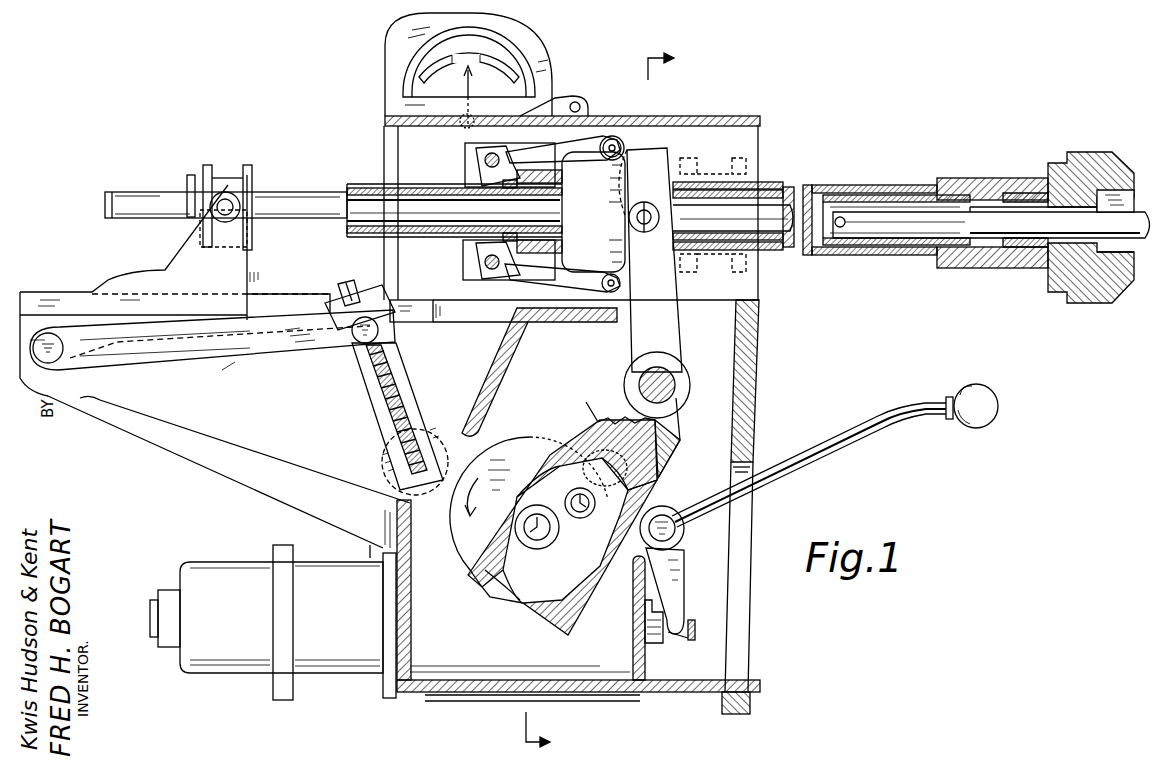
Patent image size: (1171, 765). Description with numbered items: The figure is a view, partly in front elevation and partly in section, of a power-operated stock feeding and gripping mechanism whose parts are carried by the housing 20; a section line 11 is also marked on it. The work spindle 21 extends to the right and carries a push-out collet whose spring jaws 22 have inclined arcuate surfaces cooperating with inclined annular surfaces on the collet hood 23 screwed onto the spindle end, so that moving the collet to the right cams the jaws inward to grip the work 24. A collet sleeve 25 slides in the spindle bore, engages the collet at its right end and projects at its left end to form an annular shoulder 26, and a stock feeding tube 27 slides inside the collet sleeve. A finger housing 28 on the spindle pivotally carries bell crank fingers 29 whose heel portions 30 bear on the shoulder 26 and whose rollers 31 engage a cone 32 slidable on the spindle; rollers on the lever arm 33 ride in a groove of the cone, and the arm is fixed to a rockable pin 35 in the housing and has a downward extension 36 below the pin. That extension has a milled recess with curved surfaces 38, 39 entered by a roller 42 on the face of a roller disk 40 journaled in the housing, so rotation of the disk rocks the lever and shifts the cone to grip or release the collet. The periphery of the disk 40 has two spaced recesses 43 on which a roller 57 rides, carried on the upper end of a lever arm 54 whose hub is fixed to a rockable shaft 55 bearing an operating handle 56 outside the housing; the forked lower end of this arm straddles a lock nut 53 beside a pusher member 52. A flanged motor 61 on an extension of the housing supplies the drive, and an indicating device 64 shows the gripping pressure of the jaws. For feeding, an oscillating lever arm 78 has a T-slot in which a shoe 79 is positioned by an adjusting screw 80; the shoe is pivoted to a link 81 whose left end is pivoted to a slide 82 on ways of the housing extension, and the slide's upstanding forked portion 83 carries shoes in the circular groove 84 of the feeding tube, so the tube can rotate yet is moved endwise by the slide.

The section line 11 is at (605, 390).
The housing 20 is at (745, 420).
The work spindle 21 is at (865, 188).
The spring jaws 22 is at (1128, 205).
The collet hood 23 is at (1105, 152).
The work 24 is at (1150, 240).
The collet sleeve 25 is at (870, 257).
The annular shoulder 26 is at (518, 235).
The stock feeding tube 27 is at (793, 250).
The finger housing 28 is at (465, 160).
The fingers 29 is at (530, 155).
The heel portions 30 is at (500, 196).
The rollers 31 is at (626, 152).
The cone 32 is at (593, 212).
The lever arm 33 is at (670, 285).
The rockable pin 35 is at (673, 382).
The downward extension 36 is at (672, 432).
The curved surface 38 is at (532, 550).
The curved surface 39 is at (570, 560).
The roller disk 40 is at (462, 540).
The roller 42 is at (578, 518).
The recesses 43 is at (585, 432).
The pusher member 52 is at (660, 650).
The lock nut 53 is at (695, 620).
The lever arm 54 is at (680, 584).
The rockable shaft 55 is at (684, 530).
The operating handle 56 is at (815, 452).
The roller 57 is at (640, 482).
The flanged motor 61 is at (273, 622).
The indicating device 64 is at (527, 70).
The lever arm 78 is at (418, 392).
The shoe 79 is at (345, 355).
The adjusting screw 80 is at (348, 282).
The link 81 is at (268, 350).
The slide 82 is at (118, 280).
The forked portion 83 is at (240, 248).
The circular groove 84 is at (235, 178).